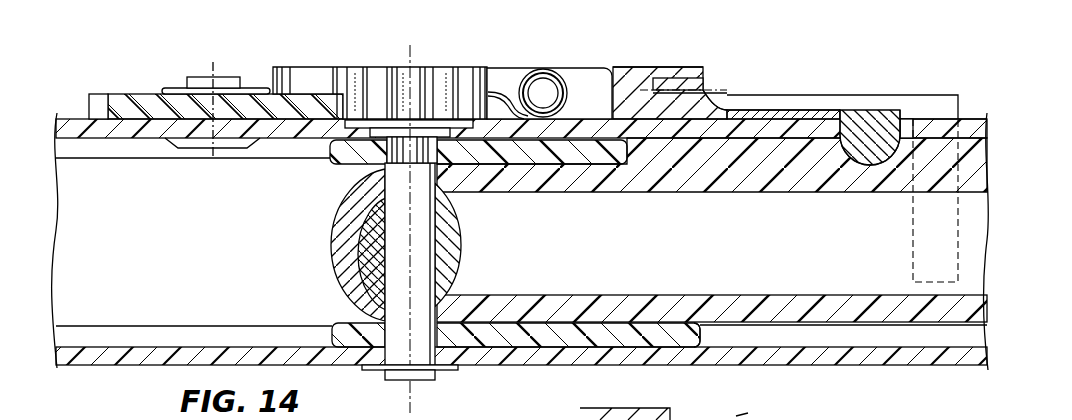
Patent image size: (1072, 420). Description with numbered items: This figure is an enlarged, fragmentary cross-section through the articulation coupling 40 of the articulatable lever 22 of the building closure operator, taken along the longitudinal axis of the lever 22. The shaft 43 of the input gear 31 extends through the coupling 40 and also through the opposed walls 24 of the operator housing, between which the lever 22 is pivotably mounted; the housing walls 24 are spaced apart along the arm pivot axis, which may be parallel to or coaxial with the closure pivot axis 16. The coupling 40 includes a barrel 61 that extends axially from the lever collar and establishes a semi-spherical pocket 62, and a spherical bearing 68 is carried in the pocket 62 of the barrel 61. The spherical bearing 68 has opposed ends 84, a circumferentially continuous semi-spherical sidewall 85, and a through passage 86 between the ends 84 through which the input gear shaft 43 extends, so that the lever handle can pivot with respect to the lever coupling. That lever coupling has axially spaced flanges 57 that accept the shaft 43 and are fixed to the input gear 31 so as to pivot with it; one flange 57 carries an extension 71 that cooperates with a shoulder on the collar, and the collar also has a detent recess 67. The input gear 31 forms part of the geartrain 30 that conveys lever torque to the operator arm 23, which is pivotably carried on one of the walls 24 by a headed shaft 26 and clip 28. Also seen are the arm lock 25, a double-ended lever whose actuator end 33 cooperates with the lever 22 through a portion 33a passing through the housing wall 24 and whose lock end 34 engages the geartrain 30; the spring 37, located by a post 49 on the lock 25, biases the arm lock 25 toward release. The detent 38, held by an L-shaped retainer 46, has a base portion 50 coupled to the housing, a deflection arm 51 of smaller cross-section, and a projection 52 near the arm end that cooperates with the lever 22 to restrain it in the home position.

The closure pivot axis 16 is at (214, 71).
The articulatable lever 22 is at (996, 168).
The operator arm 23 is at (123, 100).
The opposed walls 24 is at (68, 117).
The arm lock 25 is at (611, 64).
The headed shaft 26 is at (197, 78).
The clip 28 is at (168, 90).
The geartrain 30 is at (323, 83).
The input gear 31 is at (419, 54).
The actuator end 33 is at (953, 105).
The portion of actuator end 33a is at (960, 225).
The lock end 34 is at (329, 66).
The spring 37 is at (525, 82).
The detent 38 is at (730, 107).
The articulation coupling 40 is at (323, 287).
The shaft 43 is at (398, 352).
The retainer 46 is at (662, 72).
The post 49 is at (545, 85).
The base portion 50 is at (686, 106).
The deflection arm 51 is at (810, 110).
The projection 52 is at (888, 137).
The flanges 57 is at (588, 147).
The barrel 61 is at (483, 307).
The semi-spherical pocket 62 is at (365, 248).
The detent recess 67 is at (882, 148).
The spherical bearing 68 is at (475, 240).
The extension 71 is at (697, 335).
The opposed ends 84 is at (385, 168).
The semi-spherical sidewall 85 is at (452, 222).
The through passage 86 is at (390, 228).